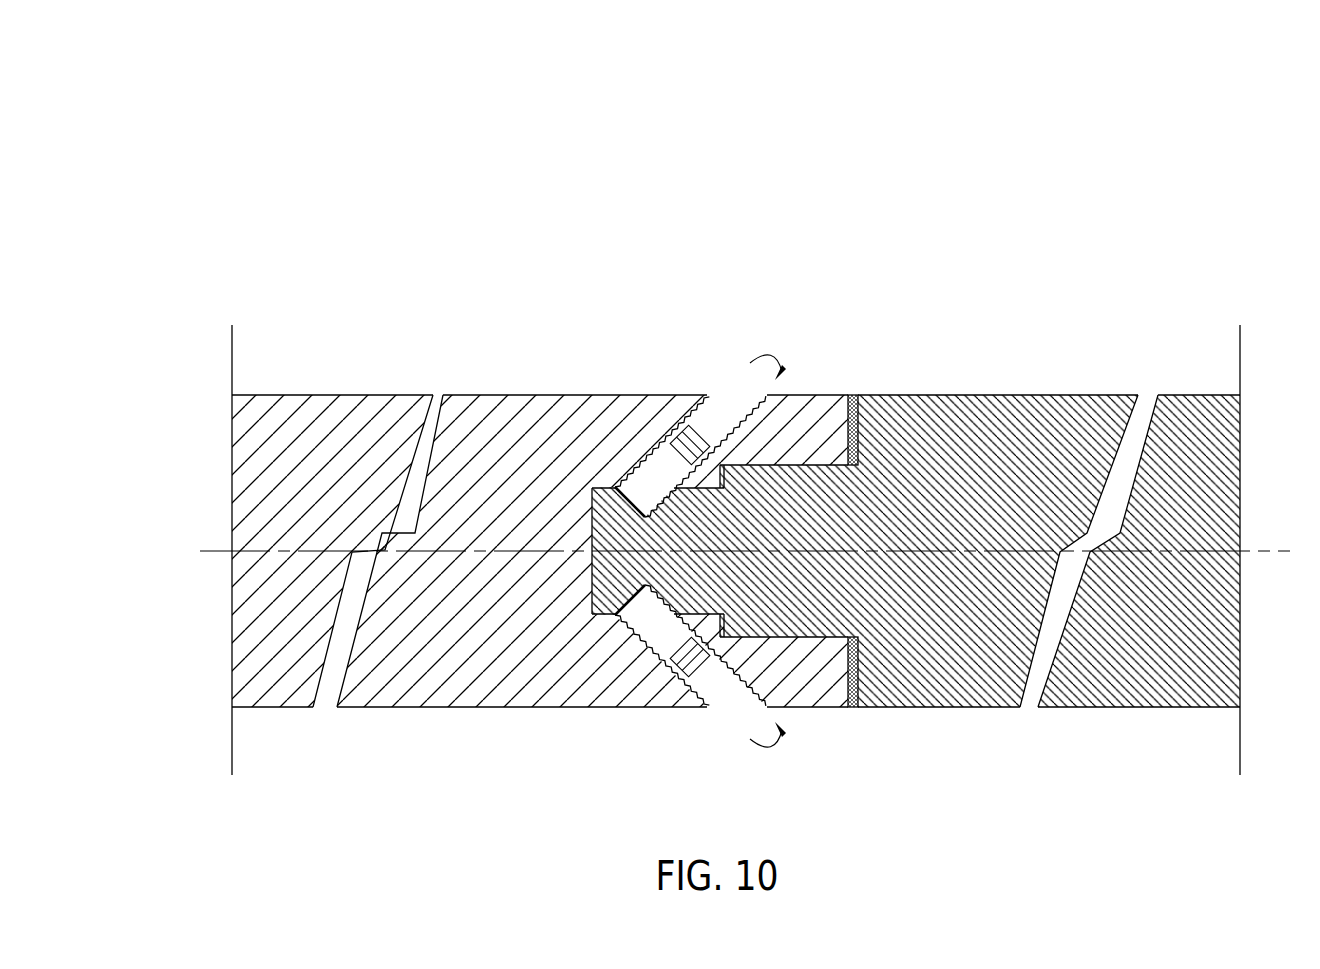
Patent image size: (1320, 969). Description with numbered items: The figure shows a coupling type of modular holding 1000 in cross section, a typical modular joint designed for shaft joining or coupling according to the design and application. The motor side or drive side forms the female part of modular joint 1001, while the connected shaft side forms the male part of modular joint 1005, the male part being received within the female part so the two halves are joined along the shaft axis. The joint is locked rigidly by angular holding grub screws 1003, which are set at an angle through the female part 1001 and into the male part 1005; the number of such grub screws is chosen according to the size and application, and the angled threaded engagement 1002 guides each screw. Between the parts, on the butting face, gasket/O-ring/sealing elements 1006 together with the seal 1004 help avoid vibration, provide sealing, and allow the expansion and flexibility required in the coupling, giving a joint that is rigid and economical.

The pipe joint assembly 1000 is at (410, 144).
The female part of modular joint 1001 is at (466, 420).
The threaded portion 1002 is at (681, 435).
The angular holding grub screws 1003 is at (730, 428).
The seal gasket 1004 is at (858, 398).
The male part of modular joint 1005 is at (1025, 428).
The gasket/O-ring/sealing elements 1006 is at (628, 500).